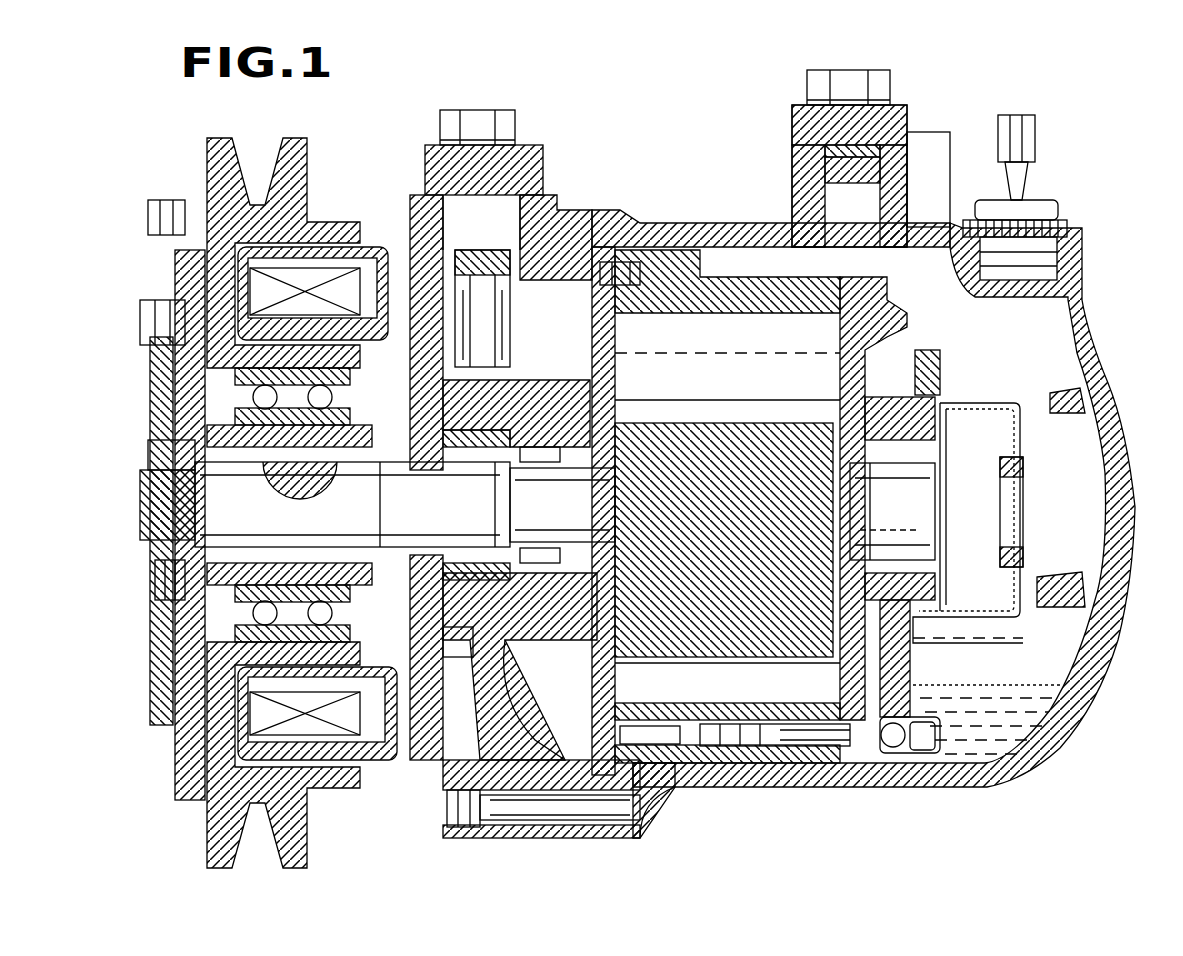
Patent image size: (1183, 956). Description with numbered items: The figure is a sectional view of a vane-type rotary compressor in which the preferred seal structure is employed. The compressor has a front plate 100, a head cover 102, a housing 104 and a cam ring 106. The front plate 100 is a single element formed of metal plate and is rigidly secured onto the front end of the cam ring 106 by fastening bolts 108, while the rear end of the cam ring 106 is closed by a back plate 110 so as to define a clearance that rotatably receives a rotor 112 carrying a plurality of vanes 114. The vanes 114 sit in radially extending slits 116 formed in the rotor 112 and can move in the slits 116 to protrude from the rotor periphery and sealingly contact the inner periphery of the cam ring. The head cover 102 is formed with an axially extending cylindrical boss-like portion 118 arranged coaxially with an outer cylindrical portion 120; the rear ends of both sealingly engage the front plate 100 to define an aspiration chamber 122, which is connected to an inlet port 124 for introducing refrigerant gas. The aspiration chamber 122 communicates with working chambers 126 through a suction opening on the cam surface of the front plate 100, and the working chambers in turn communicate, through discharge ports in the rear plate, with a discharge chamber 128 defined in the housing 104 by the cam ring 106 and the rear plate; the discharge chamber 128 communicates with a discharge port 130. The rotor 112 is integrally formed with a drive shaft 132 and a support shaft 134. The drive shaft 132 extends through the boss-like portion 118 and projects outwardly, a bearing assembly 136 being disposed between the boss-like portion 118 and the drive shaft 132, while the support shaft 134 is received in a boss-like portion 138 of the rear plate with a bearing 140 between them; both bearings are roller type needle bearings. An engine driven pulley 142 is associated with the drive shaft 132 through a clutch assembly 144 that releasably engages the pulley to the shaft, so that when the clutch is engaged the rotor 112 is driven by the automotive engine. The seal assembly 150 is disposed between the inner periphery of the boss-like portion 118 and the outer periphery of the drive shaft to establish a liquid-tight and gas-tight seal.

The front plate 100 is at (598, 330).
The head cover 102 is at (555, 235).
The housing 104 is at (705, 226).
The cam ring 106 is at (723, 297).
The fastening bolts 108 is at (620, 263).
The back plate 110 is at (883, 283).
The rotor 112 is at (787, 660).
The vanes 114 is at (790, 330).
The slits 116 is at (820, 413).
The boss-like portion 118 is at (547, 625).
The outer cylindrical portion 120 is at (547, 812).
The aspiration chamber 122 is at (403, 242).
The inlet port 124 is at (500, 195).
The working chambers 126 is at (690, 695).
The discharge chamber 128 is at (1050, 369).
The discharge port 130 is at (865, 207).
The drive shaft 132 is at (160, 583).
The support shaft 134 is at (920, 520).
The bearing assembly 136 is at (552, 393).
The boss-like portion 138 is at (940, 412).
The bearing 140 is at (1003, 477).
The pulley 142 is at (305, 153).
The clutch assembly 144 is at (312, 280).
The seal assembly 150 is at (415, 470).